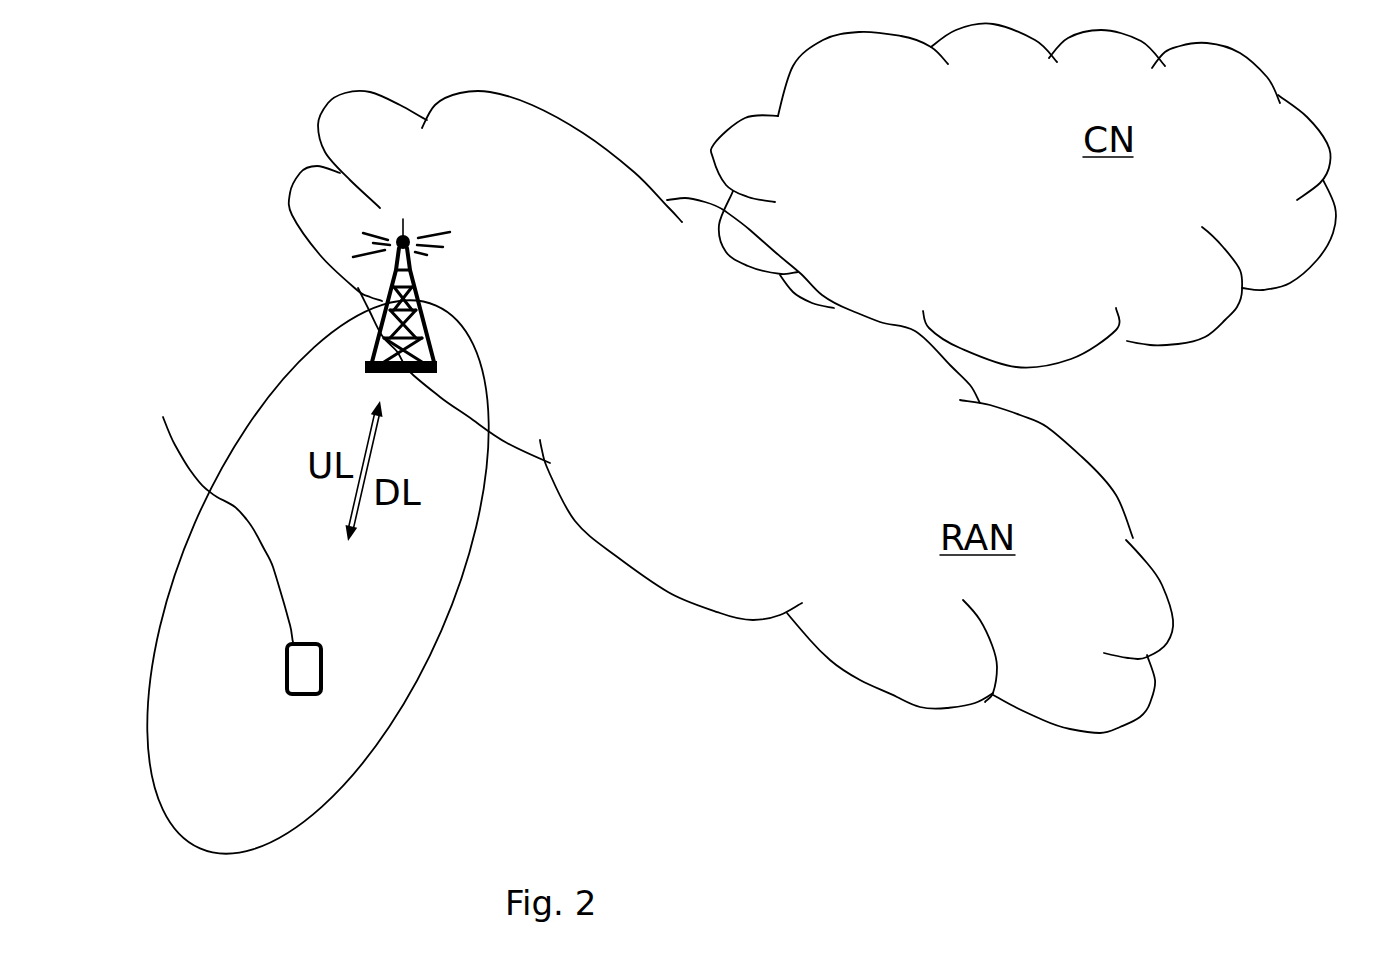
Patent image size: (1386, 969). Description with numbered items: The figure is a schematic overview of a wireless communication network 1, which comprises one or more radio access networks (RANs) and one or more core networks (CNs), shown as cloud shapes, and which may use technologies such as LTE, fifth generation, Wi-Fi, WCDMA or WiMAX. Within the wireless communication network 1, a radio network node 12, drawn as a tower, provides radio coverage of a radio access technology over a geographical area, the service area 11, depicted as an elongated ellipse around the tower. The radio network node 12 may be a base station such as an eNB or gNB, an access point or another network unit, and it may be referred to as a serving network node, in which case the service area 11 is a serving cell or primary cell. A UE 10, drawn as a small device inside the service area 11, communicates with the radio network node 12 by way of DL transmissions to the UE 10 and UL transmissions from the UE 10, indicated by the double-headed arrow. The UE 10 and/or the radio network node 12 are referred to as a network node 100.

The wireless communication network 1 is at (215, 142).
The UE 10 is at (287, 655).
The service area 11 is at (214, 788).
The radio network node 12 is at (424, 296).
The network node 100 is at (287, 380).